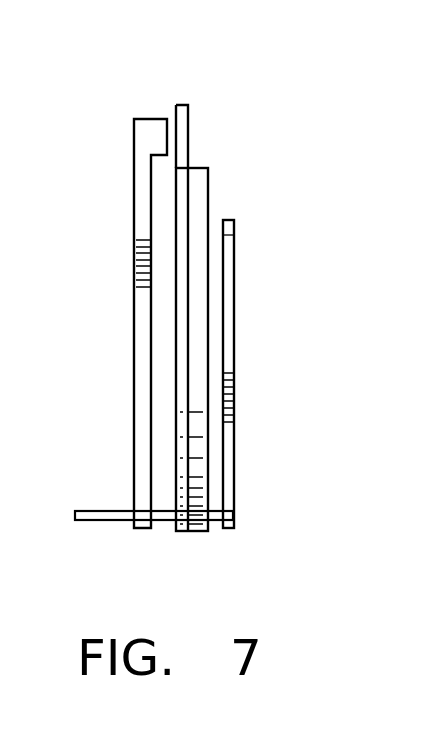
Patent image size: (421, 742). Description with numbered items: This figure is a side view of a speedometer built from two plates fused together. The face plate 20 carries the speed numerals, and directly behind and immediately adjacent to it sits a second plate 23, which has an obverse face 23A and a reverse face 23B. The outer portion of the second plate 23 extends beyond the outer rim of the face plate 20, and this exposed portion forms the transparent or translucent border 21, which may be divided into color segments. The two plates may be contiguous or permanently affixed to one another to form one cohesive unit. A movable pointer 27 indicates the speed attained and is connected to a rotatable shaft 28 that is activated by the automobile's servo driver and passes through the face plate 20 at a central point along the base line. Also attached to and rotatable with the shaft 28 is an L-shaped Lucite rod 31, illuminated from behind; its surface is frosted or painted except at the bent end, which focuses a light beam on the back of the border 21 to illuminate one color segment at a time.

The face plate 20 is at (226, 318).
The border 21 is at (181, 108).
The second plate 23 is at (226, 351).
The obverse face 23A is at (203, 499).
The reverse face 23B is at (175, 487).
The pointer 27 is at (228, 353).
The shaft 28 is at (100, 511).
The L-shaped Lucite rod 31 is at (133, 322).